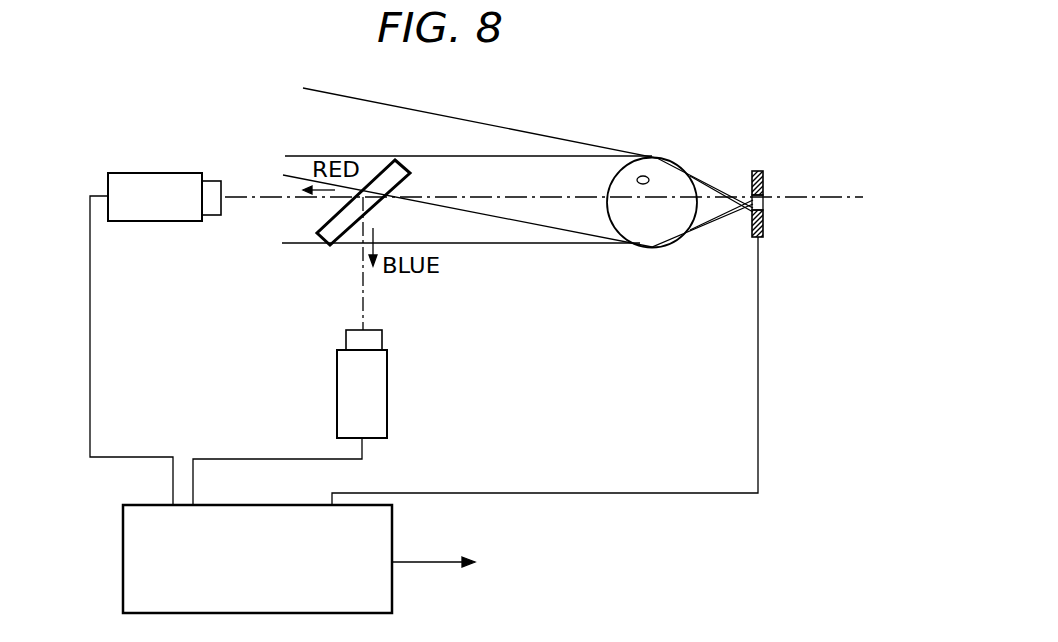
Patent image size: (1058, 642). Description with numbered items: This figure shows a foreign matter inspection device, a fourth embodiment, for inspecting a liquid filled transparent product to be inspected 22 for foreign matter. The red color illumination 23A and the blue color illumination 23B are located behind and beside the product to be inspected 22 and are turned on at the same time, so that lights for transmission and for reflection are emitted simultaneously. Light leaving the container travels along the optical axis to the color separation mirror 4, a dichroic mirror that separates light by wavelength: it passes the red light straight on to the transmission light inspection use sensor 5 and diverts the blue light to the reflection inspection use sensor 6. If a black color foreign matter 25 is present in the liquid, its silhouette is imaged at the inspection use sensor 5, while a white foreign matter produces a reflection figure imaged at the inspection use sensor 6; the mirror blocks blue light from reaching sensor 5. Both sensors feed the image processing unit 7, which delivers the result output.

The transmission light inspection use sensor 5 is at (132, 173).
The color separation mirror 4 is at (318, 234).
The reflection inspection use sensor 6 is at (337, 357).
The product to be inspected 22 is at (673, 248).
The black color foreign matter 25 is at (645, 176).
The red color illumination 23A is at (800, 165).
The blue color illumination 23B is at (760, 232).
The image processing unit 7 is at (387, 582).